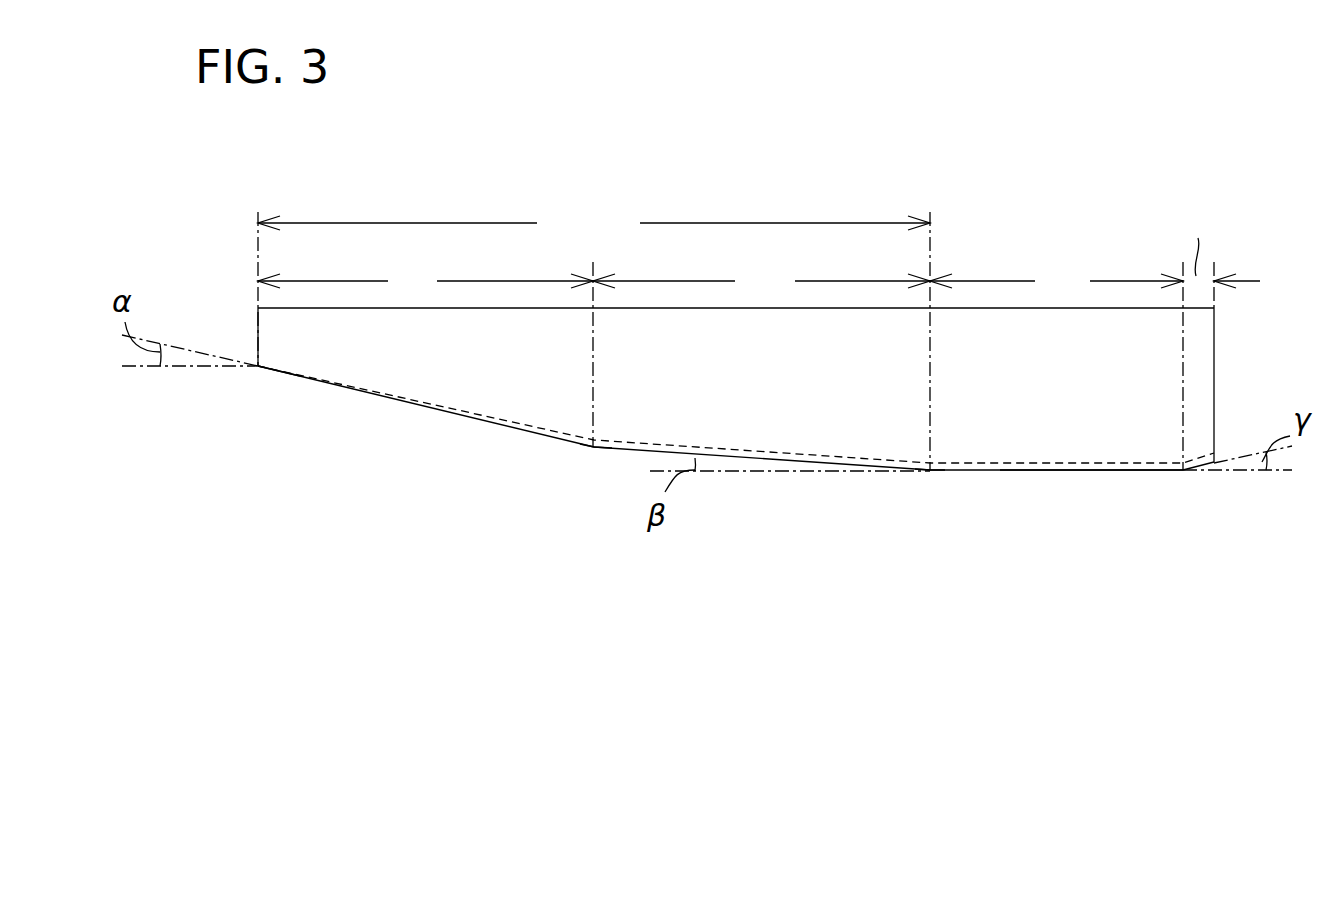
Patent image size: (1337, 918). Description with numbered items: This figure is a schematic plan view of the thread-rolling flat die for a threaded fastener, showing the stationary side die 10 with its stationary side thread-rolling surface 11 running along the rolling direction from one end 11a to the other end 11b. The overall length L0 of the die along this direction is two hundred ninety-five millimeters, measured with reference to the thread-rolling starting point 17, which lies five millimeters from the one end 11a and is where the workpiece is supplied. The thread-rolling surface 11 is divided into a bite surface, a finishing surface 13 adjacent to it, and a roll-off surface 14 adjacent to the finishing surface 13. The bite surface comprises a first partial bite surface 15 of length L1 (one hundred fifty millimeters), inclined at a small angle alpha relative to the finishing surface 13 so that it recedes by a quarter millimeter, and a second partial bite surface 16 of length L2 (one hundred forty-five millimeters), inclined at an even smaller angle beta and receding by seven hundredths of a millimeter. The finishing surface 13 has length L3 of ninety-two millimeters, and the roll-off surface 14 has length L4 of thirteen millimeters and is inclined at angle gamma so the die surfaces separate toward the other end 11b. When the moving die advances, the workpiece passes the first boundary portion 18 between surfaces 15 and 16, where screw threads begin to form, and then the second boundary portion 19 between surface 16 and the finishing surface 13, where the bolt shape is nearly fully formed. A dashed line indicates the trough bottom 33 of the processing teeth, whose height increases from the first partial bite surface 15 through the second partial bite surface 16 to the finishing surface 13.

The stationary side die 10 is at (732, 360).
The stationary side thread-rolling surface 11 is at (1056, 524).
The one end 11a is at (258, 370).
The other end 11b is at (1214, 462).
The finishing surface 13 is at (1080, 472).
The roll-off surface 14 is at (1197, 470).
The first partial bite surface 15 is at (406, 402).
The second partial bite surface 16 is at (758, 460).
The thread-rolling starting point 17 is at (266, 370).
The first boundary portion 18 is at (594, 450).
The second boundary portion 19 is at (928, 474).
The trough bottom 33 is at (512, 426).
The length L0 is at (594, 224).
The length L1 is at (425, 281).
The length L2 is at (761, 281).
The length L3 is at (1056, 281).
The length L4 is at (1222, 243).